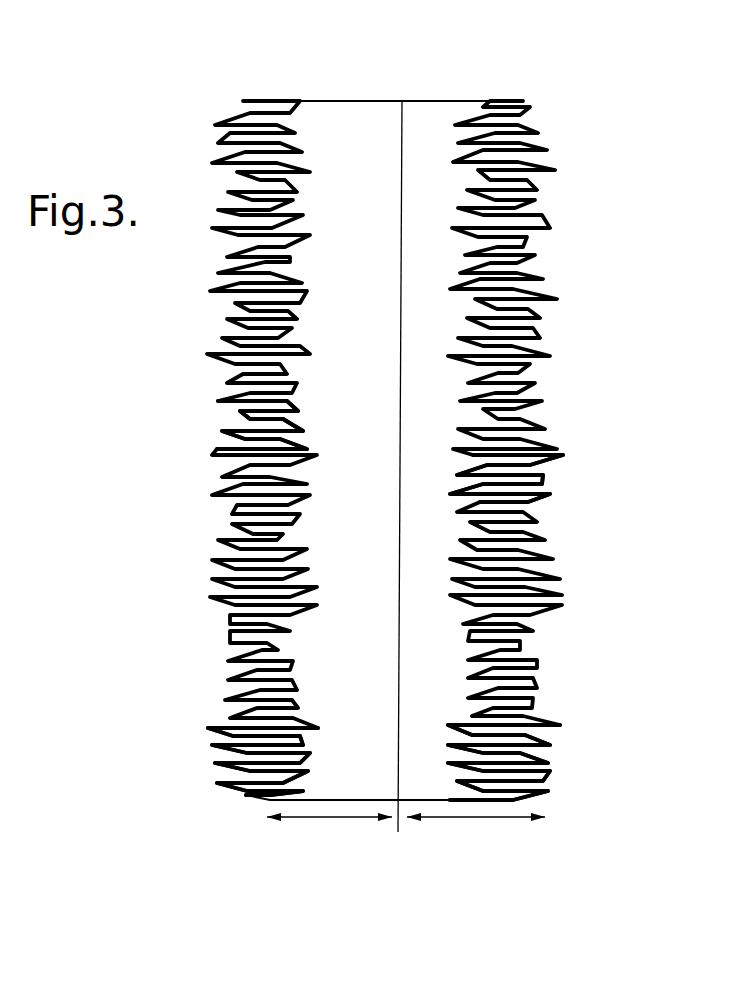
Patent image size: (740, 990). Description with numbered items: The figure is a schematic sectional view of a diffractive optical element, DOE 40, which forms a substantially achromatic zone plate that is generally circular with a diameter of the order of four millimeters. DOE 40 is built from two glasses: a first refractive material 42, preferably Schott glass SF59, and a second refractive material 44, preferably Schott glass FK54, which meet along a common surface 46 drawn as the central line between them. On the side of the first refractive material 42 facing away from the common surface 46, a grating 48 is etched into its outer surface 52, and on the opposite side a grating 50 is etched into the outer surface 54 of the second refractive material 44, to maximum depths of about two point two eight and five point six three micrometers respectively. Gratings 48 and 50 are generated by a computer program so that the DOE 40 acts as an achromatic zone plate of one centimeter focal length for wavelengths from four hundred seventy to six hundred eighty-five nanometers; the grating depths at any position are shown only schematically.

The DOE 40 is at (190, 154).
The first refractive material 42 is at (312, 376).
The second refractive material 44 is at (442, 332).
The common surface 46 is at (408, 121).
The grating 48 is at (183, 771).
The grating 50 is at (569, 784).
The outer surface 52 is at (225, 448).
The outer surface 54 is at (545, 497).